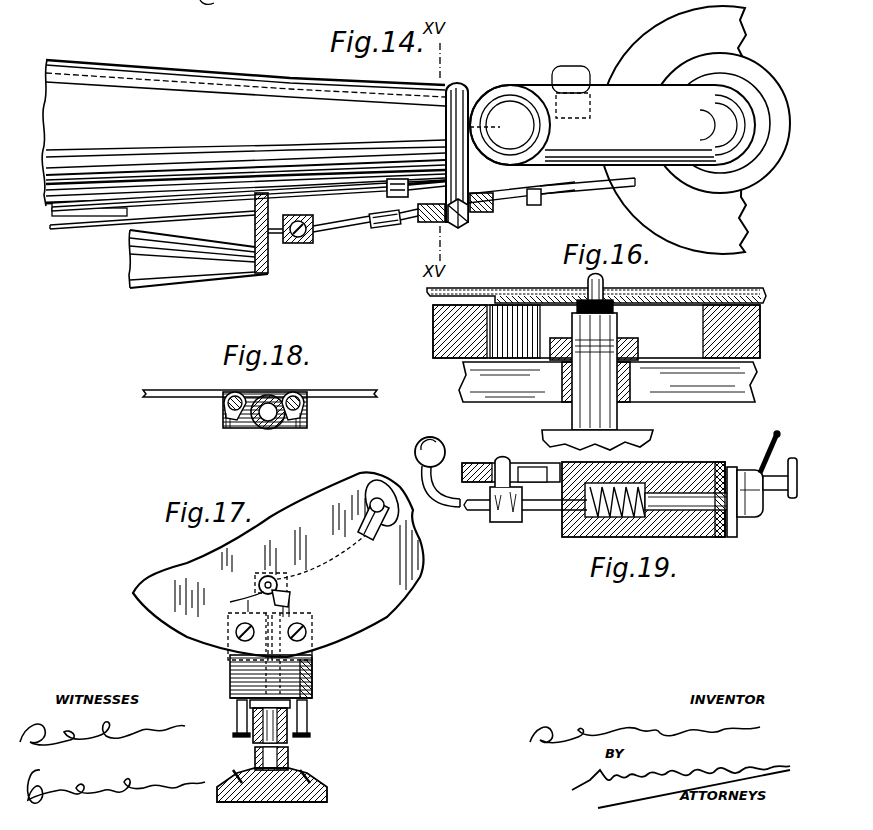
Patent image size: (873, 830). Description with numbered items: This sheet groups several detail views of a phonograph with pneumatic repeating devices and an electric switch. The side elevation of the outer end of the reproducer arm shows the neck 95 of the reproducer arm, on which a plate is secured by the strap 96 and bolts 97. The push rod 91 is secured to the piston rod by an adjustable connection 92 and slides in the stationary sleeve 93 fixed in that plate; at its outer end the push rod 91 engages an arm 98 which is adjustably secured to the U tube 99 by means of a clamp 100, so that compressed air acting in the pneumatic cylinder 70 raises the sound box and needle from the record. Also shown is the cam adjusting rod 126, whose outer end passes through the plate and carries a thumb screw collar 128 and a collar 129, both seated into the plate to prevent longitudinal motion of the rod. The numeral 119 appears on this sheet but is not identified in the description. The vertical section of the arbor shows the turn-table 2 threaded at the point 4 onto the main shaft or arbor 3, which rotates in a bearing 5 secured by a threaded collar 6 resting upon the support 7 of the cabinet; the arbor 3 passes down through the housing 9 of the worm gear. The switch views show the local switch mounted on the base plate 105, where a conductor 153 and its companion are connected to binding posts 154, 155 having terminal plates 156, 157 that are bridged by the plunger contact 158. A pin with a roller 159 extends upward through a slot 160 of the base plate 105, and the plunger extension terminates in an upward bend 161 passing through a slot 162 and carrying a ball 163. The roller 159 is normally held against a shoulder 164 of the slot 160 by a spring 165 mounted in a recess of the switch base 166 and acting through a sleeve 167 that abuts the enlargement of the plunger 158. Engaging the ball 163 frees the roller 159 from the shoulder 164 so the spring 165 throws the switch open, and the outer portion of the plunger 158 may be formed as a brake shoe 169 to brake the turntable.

In FIG. 16, the turn-table 2 is at (697, 287).
In FIG. 16, the main shaft or arbor 3 is at (587, 274).
In FIG. 16, the threaded point 4 is at (612, 308).
In FIG. 16, the bearing 5 is at (575, 417).
In FIG. 16, the threaded collar 6 is at (555, 338).
In FIG. 16, the support 7 is at (608, 392).
In FIG. 16, the housing 9 is at (627, 437).
In FIG. 14, the pneumatic cylinder 70 is at (180, 282).
In FIG. 14, the push rod 91 is at (343, 232).
In FIG. 14, the adjustable connection 92 is at (300, 243).
In FIG. 14, the stationary sleeve 93 is at (420, 218).
In FIG. 14, the neck of the reproducer arm 95 is at (243, 138).
In FIG. 14, the strap 96 is at (459, 84).
In FIG. 14, the bolts 97 is at (460, 224).
In FIG. 14, the arm 98 is at (628, 163).
In FIG. 14, the U tube 99 is at (630, 123).
In FIG. 14, the clamp 100 is at (507, 80).
In FIG. 19, the base plate 105 is at (620, 465).
In FIG. 18, the base plate 105 is at (170, 392).
In FIG. 17, the base plate 105 is at (383, 607).
In FIG. 14, the lever 119 is at (224, 13).
In FIG. 14, the cam adjusting rod 126 is at (80, 230).
In FIG. 14, the thumb screw collar 128 is at (538, 205).
In FIG. 14, the collar 129 is at (405, 179).
In FIG. 19, the conductor 153 is at (758, 449).
In FIG. 18, the binding post 154 is at (310, 410).
In FIG. 17, the binding post 154 is at (308, 712).
In FIG. 19, the binding post 155 is at (792, 457).
In FIG. 18, the binding post 155 is at (223, 405).
In FIG. 17, the binding post 155 is at (237, 710).
In FIG. 18, the terminal plate 156 is at (293, 426).
In FIG. 17, the terminal plate 156 is at (297, 697).
In FIG. 18, the terminal plate 157 is at (233, 414).
In FIG. 17, the terminal plate 157 is at (230, 697).
In FIG. 19, the plunger contact 158 is at (767, 527).
In FIG. 18, the plunger contact 158 is at (287, 393).
In FIG. 17, the plunger contact 158 is at (290, 743).
In FIG. 19, the roller 159 is at (497, 463).
In FIG. 17, the roller 159 is at (262, 572).
In FIG. 19, the slot 160 is at (535, 474).
In FIG. 17, the slot 160 is at (288, 593).
In FIG. 19, the upward bend 161 is at (457, 515).
In FIG. 17, the upward bend 161 is at (360, 523).
In FIG. 17, the slot 162 is at (378, 490).
In FIG. 19, the ball 163 is at (430, 437).
In FIG. 17, the ball 163 is at (392, 531).
In FIG. 17, the shoulder 164 is at (225, 601).
In FIG. 19, the spring 165 is at (593, 535).
In FIG. 19, the switch base 166 is at (715, 460).
In FIG. 18, the switch base 166 is at (240, 428).
In FIG. 17, the switch base 166 is at (230, 668).
In FIG. 19, the sleeve 167 is at (677, 533).
In FIG. 17, the brake shoe 169 is at (323, 787).